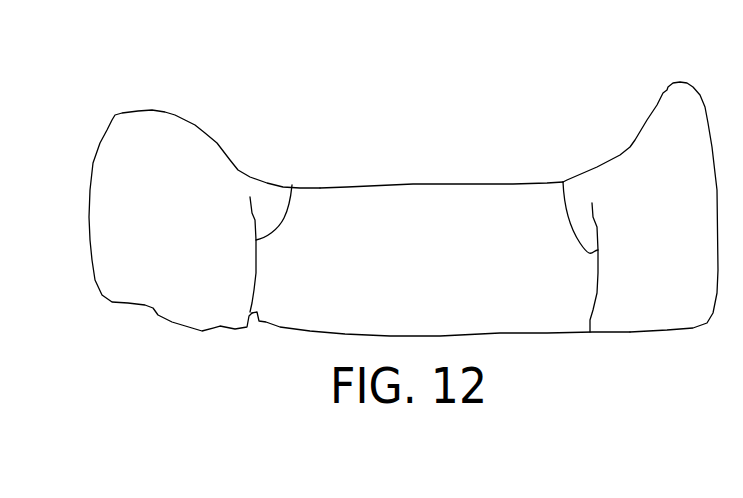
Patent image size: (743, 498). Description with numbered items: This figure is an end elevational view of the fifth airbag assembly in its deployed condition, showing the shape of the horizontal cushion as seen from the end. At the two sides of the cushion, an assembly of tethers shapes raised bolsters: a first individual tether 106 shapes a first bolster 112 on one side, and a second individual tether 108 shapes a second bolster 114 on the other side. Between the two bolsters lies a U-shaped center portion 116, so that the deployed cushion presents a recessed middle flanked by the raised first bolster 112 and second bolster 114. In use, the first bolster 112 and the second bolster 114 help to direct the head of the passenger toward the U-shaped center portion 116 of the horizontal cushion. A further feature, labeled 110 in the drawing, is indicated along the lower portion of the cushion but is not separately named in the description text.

The first individual tether 106 is at (292, 185).
The second individual tether 108 is at (563, 182).
The bottom portion 110 is at (333, 308).
The first bolster 112 is at (173, 140).
The second bolster 114 is at (680, 103).
The U-shaped center portion 116 is at (412, 178).